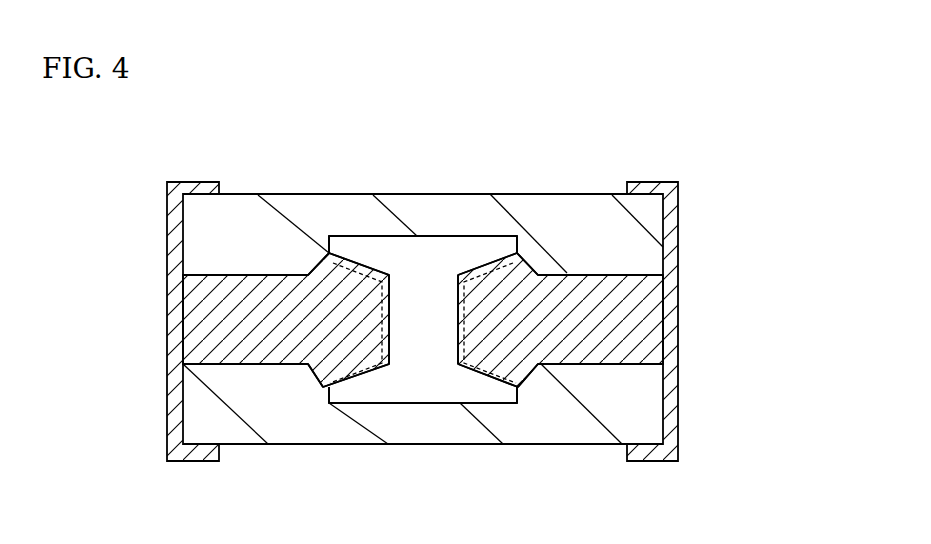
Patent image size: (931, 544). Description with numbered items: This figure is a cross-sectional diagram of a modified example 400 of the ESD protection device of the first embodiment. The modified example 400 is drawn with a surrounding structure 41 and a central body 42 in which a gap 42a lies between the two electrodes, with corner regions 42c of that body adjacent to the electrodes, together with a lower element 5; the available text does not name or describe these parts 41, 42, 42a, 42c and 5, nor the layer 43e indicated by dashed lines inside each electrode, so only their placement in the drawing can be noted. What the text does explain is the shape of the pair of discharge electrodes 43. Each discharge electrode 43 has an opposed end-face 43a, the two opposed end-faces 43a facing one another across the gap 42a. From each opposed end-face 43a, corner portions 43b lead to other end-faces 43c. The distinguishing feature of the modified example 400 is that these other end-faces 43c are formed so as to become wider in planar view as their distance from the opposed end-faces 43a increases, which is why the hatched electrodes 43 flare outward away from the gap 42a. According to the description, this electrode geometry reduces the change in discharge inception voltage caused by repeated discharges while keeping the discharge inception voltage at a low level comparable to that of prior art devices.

The modified example 400 is at (101, 104).
The case 41 is at (635, 210).
The magnetic core 42 is at (435, 272).
The gap 42a is at (415, 321).
The corner portion of core 42c is at (329, 253).
The discharge electrodes 43 is at (183, 312).
The opposed end-faces 43a is at (391, 336).
The corner portions 43b is at (380, 271).
The other end-faces 43c is at (320, 250).
The coating layer 43e is at (383, 318).
The substrate 5 is at (167, 415).